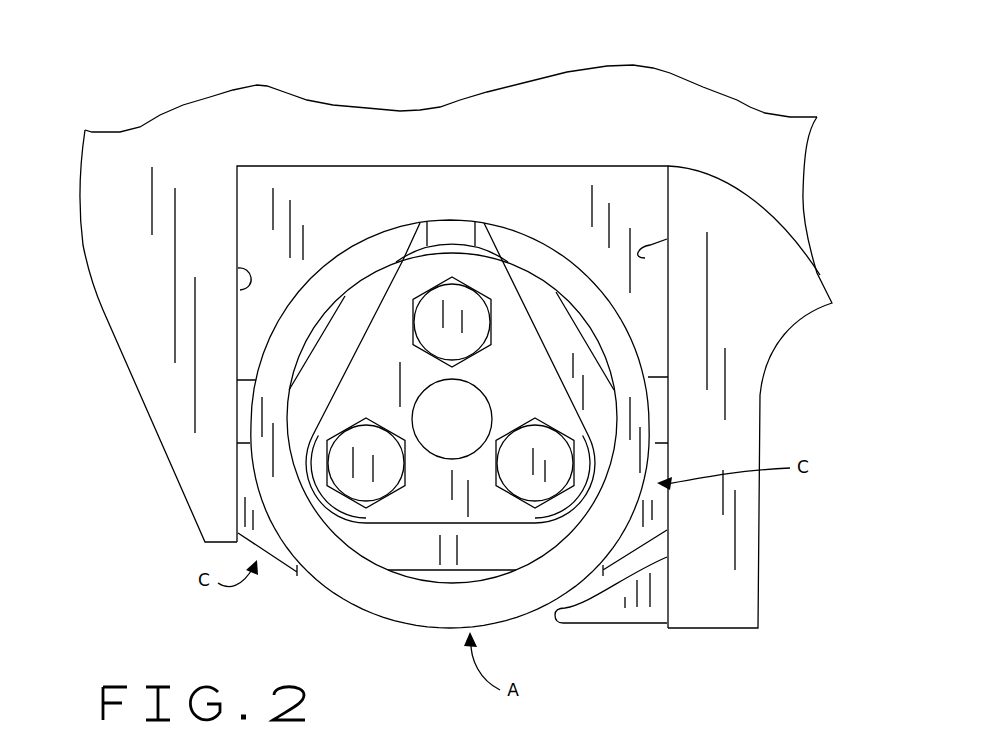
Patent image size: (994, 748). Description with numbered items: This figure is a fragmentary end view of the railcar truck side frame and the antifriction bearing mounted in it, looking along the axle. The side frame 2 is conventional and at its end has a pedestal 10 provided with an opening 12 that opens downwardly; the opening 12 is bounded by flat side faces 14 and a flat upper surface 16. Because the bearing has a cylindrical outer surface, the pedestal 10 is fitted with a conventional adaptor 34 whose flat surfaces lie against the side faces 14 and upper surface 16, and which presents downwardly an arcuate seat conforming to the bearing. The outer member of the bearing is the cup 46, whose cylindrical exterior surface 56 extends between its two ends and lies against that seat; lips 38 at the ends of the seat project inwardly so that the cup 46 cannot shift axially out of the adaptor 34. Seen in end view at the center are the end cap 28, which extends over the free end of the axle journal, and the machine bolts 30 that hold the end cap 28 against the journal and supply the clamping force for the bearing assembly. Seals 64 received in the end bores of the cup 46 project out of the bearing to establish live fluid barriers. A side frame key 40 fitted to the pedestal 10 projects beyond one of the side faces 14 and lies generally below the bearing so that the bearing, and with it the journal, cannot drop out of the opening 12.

The side frame 2 is at (617, 102).
The pedestal 10 is at (167, 395).
The opening 12 is at (623, 203).
The flat side faces 14 is at (240, 290).
The flat upper surface 16 is at (550, 170).
The end cap 28 is at (382, 543).
The machine bolts 30 is at (525, 482).
The adaptor 34 is at (432, 193).
The lips 38 is at (343, 250).
The side frame key 40 is at (633, 610).
The cup 46 is at (400, 607).
The cylindrical exterior surface 56 is at (360, 607).
The seals 64 is at (355, 570).